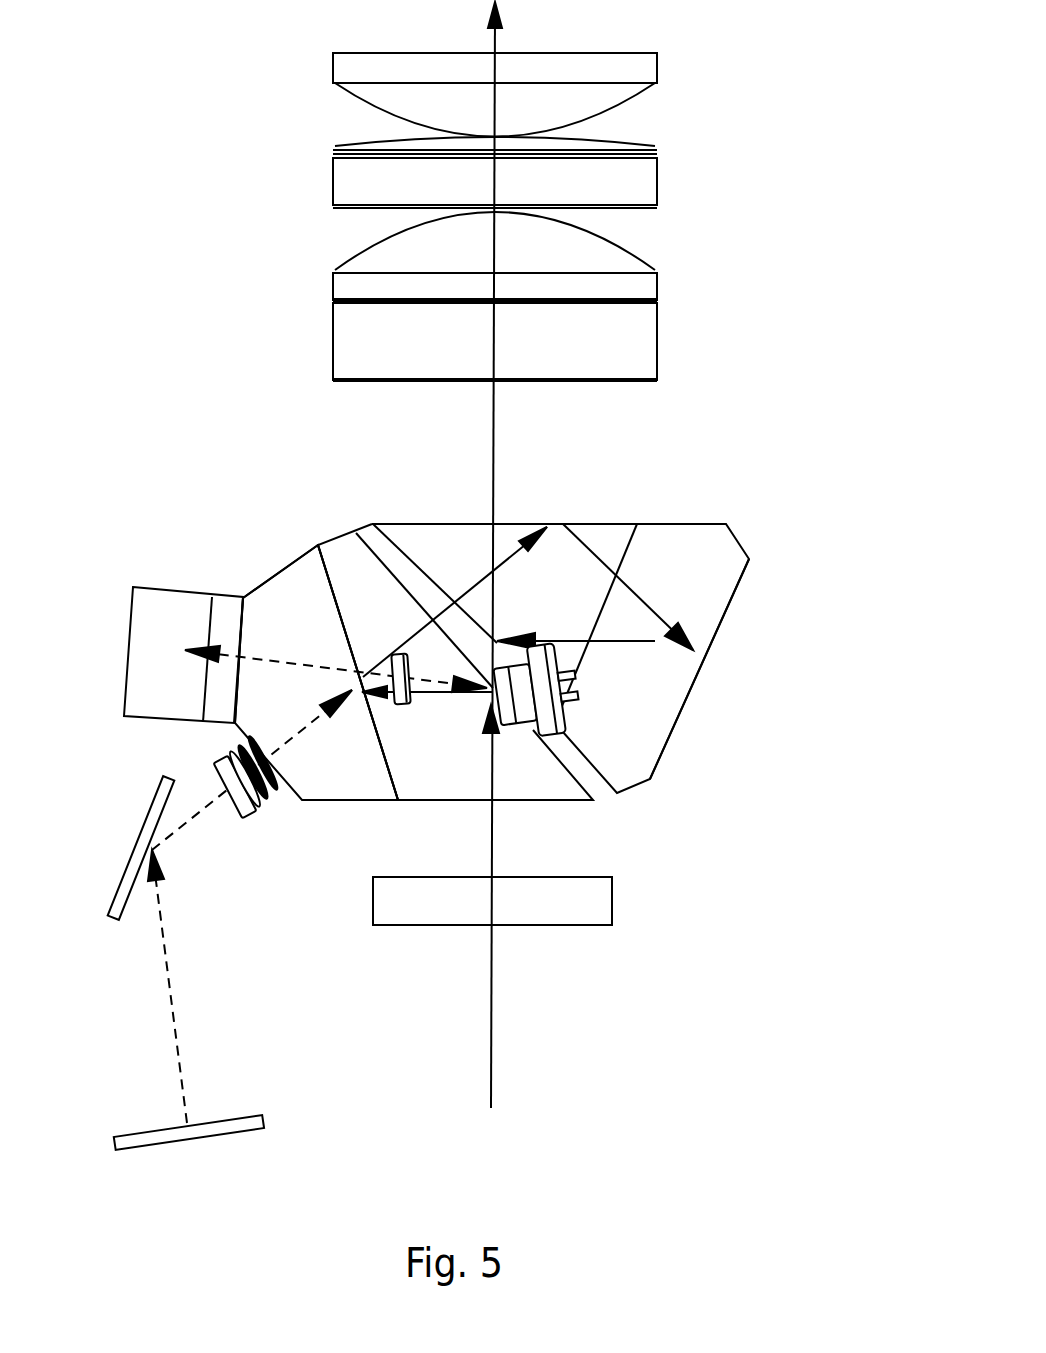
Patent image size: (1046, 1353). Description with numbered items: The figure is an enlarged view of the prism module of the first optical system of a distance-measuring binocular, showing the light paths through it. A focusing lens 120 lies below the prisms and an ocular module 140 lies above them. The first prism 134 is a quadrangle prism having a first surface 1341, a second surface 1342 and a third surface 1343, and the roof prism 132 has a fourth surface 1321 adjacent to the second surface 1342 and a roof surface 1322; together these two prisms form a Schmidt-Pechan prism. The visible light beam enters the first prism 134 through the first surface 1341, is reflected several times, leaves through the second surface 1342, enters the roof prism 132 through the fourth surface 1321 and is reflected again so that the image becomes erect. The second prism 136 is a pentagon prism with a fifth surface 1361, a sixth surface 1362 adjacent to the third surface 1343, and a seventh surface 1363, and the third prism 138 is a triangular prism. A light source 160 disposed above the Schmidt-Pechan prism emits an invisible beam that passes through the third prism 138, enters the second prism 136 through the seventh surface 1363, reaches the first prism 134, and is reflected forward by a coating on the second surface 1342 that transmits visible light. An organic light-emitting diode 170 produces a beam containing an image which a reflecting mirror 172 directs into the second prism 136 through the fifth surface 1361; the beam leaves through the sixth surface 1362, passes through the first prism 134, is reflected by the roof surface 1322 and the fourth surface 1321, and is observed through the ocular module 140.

The focusing lens 120 is at (547, 903).
The roof prism 132 is at (676, 579).
The fourth surface 1321 is at (383, 537).
The roof surface 1322 is at (701, 668).
The first prism 134 is at (340, 560).
The first surface 1341 is at (553, 800).
The second surface 1342 is at (367, 550).
The third surface 1343 is at (380, 753).
The second prism 136 is at (232, 612).
The fifth surface 1361 is at (278, 790).
The sixth surface 1362 is at (278, 607).
The seventh surface 1363 is at (213, 615).
The third prism 138 is at (182, 615).
The ocular module 140 is at (683, 172).
The light source 160 is at (517, 690).
The organic light-emitting diode 170 is at (228, 1135).
The reflecting mirror 172 is at (110, 915).